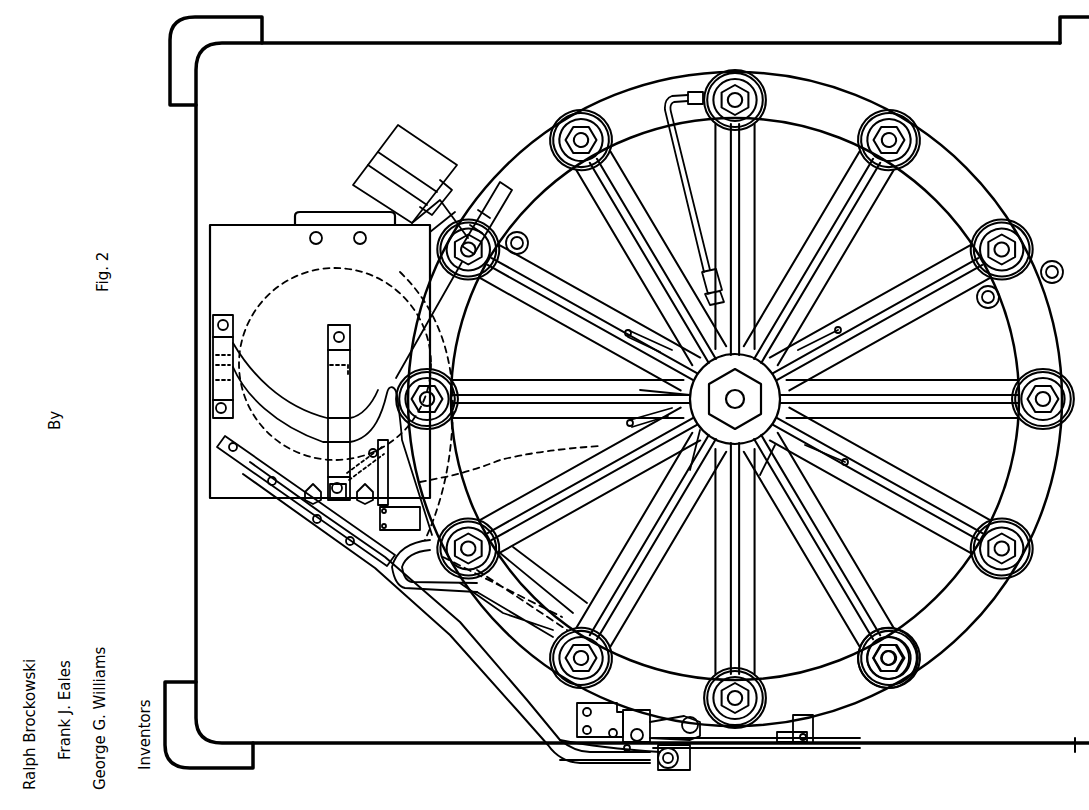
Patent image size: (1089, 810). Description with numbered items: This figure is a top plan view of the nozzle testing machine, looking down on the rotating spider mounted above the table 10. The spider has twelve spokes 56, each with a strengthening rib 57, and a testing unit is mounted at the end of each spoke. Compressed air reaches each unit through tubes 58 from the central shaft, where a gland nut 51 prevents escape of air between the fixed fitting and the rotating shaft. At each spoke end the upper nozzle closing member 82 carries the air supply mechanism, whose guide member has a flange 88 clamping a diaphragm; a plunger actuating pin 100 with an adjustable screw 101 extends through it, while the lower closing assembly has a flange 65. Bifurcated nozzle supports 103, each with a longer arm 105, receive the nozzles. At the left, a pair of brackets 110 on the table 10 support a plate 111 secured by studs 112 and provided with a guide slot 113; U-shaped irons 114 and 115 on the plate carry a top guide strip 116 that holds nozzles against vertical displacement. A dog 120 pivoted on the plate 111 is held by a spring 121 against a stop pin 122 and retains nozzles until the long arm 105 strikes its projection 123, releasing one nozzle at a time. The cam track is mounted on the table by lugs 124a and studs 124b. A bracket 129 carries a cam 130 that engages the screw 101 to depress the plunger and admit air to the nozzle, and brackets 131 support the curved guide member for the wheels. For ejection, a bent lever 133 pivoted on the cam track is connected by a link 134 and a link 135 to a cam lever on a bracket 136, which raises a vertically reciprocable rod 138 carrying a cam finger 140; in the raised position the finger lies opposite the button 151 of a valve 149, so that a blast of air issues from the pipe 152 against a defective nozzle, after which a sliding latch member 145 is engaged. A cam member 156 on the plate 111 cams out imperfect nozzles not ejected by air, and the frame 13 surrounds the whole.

The table 10 is at (742, 399).
The frame 13 is at (173, 708).
The gland nut 51 is at (782, 399).
The spokes 56 is at (830, 302).
The strengthening rib 57 is at (860, 262).
The tubes 58 is at (680, 160).
The flange 65 is at (890, 690).
The nozzle closing member 82 is at (860, 668).
The flange 88 is at (904, 658).
The plunger actuating pin 100 is at (900, 672).
The adjustable screw 101 is at (898, 650).
The nozzle supports 103 is at (490, 464).
The longer arm 105 is at (427, 563).
The brackets 110 is at (320, 212).
The plate 111 is at (344, 390).
The studs 112 is at (320, 242).
The guide slot 113 is at (246, 372).
The U-shaped iron 114 is at (236, 345).
The U-shaped iron 115 is at (358, 380).
The top guide strip 116 is at (290, 414).
The dog 120 is at (392, 463).
The spring 121 is at (352, 504).
The stop pin 122 is at (384, 447).
The projection 123 is at (400, 518).
The lugs 124a is at (526, 234).
The studs 124b is at (528, 242).
The bracket 129 is at (437, 157).
The cam 130 is at (497, 191).
The brackets 131 is at (655, 751).
The bent lever 133 is at (814, 722).
The link 134 is at (792, 744).
The link 135 is at (762, 752).
The bracket 136 is at (576, 716).
The vertically reciprocable rod 138 is at (642, 712).
The cam finger 140 is at (680, 720).
The sliding latch member 145 is at (640, 752).
The valve 149 is at (674, 768).
The button 151 is at (700, 750).
The pipe 152 is at (488, 672).
The cam member 156 is at (272, 500).